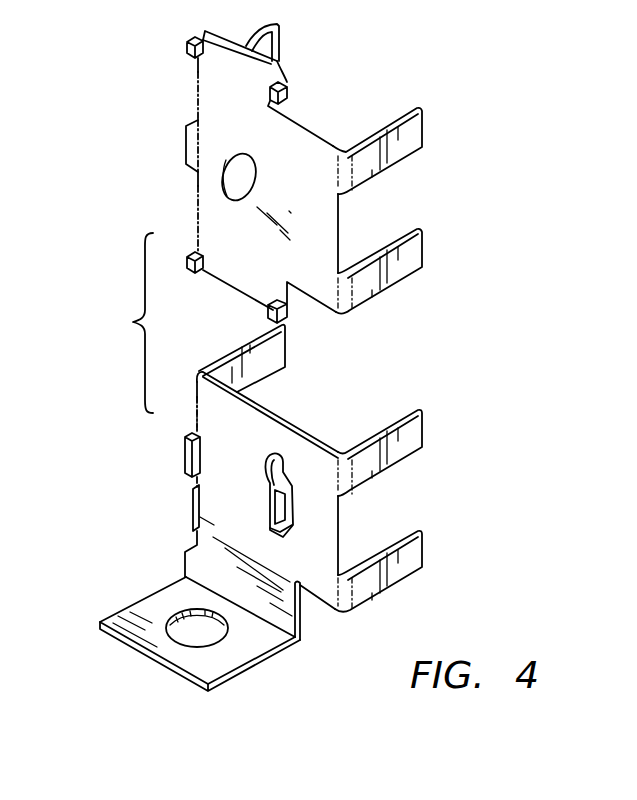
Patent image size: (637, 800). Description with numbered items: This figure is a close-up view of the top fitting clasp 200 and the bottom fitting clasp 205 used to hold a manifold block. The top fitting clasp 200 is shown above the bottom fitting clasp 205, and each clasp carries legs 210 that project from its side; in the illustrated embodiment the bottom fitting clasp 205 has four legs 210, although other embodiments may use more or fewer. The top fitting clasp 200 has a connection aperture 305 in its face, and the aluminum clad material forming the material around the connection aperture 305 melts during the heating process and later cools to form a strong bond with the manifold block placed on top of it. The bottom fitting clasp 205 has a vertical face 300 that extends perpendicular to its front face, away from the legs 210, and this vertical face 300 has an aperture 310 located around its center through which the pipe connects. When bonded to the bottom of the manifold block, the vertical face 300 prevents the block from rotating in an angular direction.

The top fitting clasp 200 is at (135, 111).
The bottom fitting clasp 205 is at (122, 471).
The legs 210 is at (393, 124).
The vertical face 300 is at (168, 672).
The connection aperture 305 is at (240, 176).
The aperture 310 is at (197, 628).